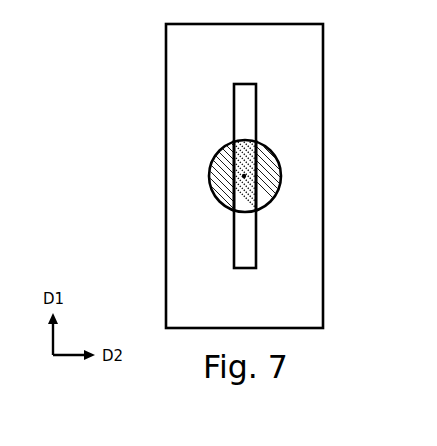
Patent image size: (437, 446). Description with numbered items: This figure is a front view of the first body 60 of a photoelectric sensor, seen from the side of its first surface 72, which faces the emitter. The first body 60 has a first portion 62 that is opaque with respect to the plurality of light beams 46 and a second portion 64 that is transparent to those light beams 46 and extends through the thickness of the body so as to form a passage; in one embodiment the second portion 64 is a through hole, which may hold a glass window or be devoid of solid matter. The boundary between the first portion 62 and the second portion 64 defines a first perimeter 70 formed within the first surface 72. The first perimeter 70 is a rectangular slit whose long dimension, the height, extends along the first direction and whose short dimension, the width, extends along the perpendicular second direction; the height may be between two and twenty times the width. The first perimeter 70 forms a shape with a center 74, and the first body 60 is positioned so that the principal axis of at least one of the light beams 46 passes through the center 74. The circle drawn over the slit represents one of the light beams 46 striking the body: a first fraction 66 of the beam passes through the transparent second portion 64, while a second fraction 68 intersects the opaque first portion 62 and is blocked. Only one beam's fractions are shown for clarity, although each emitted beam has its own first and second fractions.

The plurality of light beams 46 is at (319, 214).
The first body 60 is at (213, 176).
The first portion 62 is at (143, 206).
The second portion 64 is at (175, 288).
The first fraction 66 is at (306, 126).
The second fraction 68 is at (243, 161).
The first perimeter 70 is at (303, 162).
The first surface 72 is at (149, 93).
The center 74 is at (178, 148).